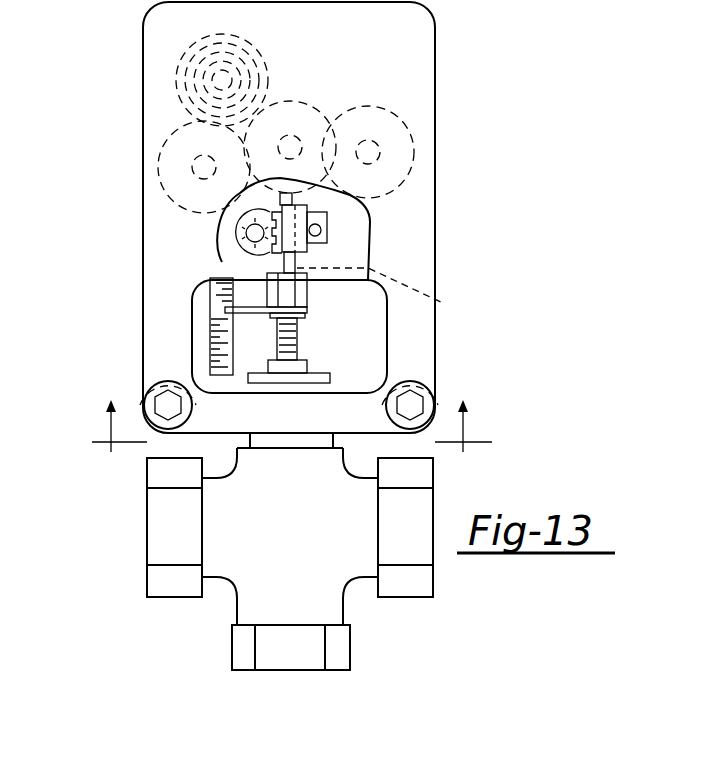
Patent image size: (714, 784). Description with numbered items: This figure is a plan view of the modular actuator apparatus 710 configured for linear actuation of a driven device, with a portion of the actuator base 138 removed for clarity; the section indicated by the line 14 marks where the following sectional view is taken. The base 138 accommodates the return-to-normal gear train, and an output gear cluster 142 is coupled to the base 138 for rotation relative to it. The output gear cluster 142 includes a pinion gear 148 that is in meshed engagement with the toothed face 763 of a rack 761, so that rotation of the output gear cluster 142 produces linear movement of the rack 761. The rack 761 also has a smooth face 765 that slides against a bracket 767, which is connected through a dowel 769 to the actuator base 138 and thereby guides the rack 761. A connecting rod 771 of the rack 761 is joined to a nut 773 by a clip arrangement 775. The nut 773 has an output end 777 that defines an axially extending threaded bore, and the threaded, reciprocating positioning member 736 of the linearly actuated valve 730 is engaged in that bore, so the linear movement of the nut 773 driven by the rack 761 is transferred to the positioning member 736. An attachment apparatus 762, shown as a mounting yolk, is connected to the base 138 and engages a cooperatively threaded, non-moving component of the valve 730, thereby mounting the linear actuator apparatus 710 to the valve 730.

The modular actuator apparatus 710 is at (450, 82).
The actuator base 138 is at (436, 96).
The rack 761 is at (284, 186).
The toothed face 763 is at (278, 195).
The pinion gear 148 is at (246, 233).
The output gear cluster 142 is at (212, 256).
The smooth face 765 is at (307, 205).
The dowel 769 is at (321, 230).
The bracket 767 is at (366, 278).
The connecting rod 771 is at (394, 293).
The nut 773 is at (302, 293).
The clip arrangement 775 is at (309, 306).
The output end 777 is at (302, 318).
The positioning member 736 is at (305, 383).
The attachment apparatus 762 is at (186, 436).
The linearly actuated valve 730 is at (437, 571).
The drive shaft 14 is at (286, 420).